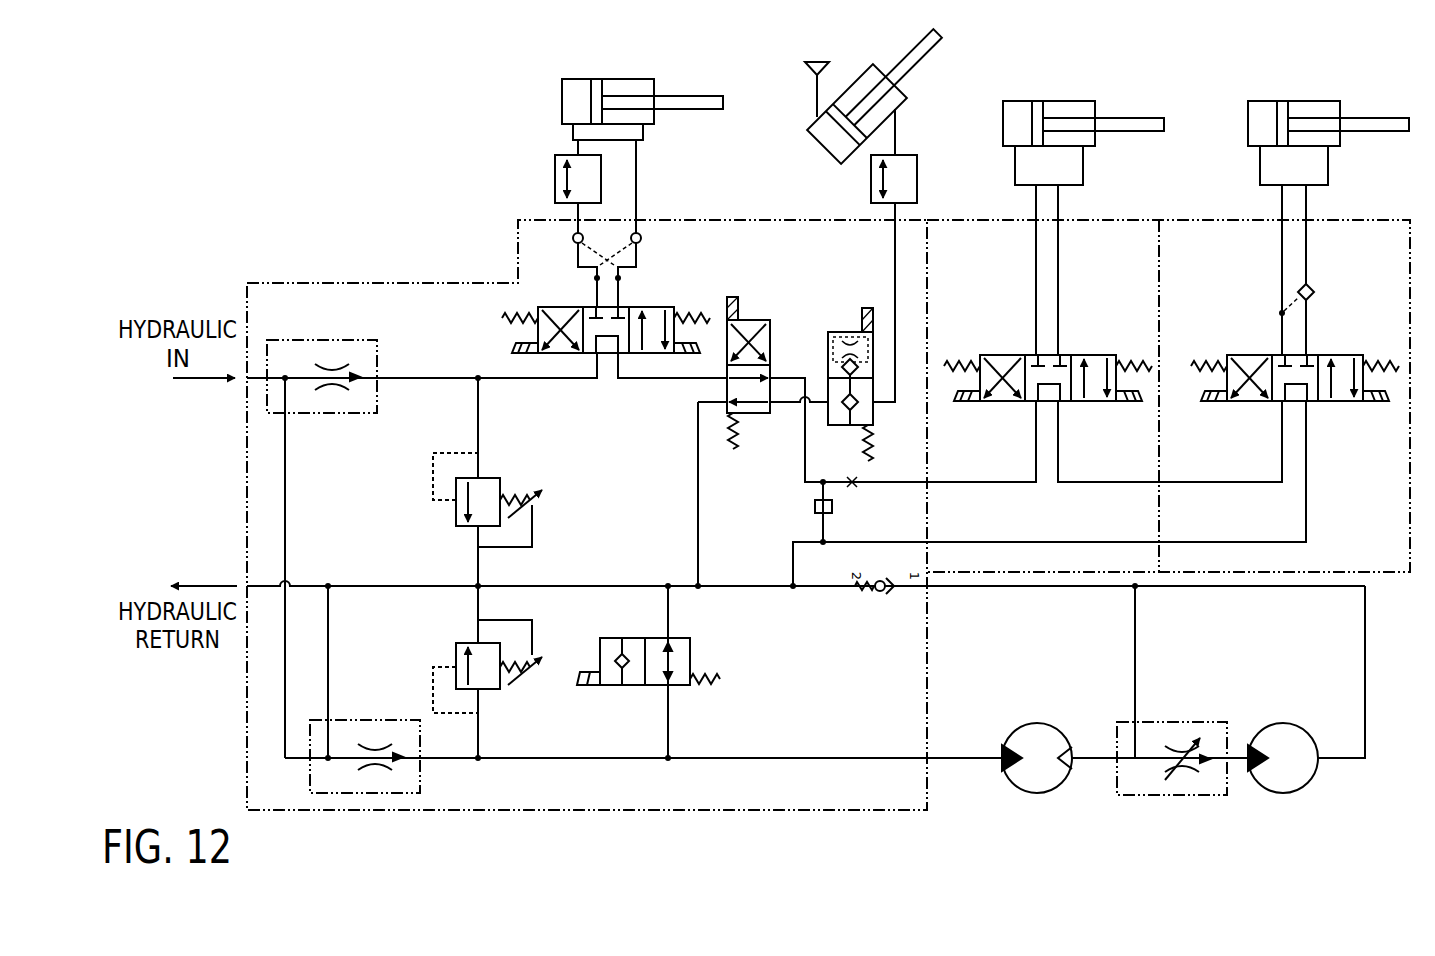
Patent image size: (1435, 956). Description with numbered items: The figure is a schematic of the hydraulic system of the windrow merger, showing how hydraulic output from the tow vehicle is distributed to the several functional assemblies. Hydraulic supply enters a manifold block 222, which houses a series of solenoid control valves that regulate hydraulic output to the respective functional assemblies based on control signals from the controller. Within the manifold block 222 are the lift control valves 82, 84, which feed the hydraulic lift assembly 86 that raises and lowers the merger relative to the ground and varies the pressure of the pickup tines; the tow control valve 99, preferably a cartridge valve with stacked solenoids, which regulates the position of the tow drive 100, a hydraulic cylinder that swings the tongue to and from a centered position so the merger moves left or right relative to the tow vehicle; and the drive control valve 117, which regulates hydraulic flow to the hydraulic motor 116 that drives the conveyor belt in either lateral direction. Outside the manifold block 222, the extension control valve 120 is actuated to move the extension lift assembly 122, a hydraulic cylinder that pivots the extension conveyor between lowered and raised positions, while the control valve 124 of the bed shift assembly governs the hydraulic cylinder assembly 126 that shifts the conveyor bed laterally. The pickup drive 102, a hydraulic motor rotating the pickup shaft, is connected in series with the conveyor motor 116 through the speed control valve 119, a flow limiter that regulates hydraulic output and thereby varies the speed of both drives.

The lift control valve 82 is at (752, 313).
The lift control valve 84 is at (848, 332).
The hydraulic lift assembly 86 is at (860, 77).
The tow control valve 99 is at (653, 306).
The tow drive 100 is at (630, 79).
The pickup drive 102 is at (1285, 800).
The hydraulic motor 116 is at (1012, 785).
The drive control valve 117 is at (692, 652).
The speed control valve 119 is at (1178, 797).
The extension control valve 120 is at (1093, 355).
The extension lift assembly 122 is at (1063, 100).
The control valve 124 is at (1333, 355).
The hydraulic cylinder assembly 126 is at (1308, 100).
The manifold block 222 is at (560, 812).